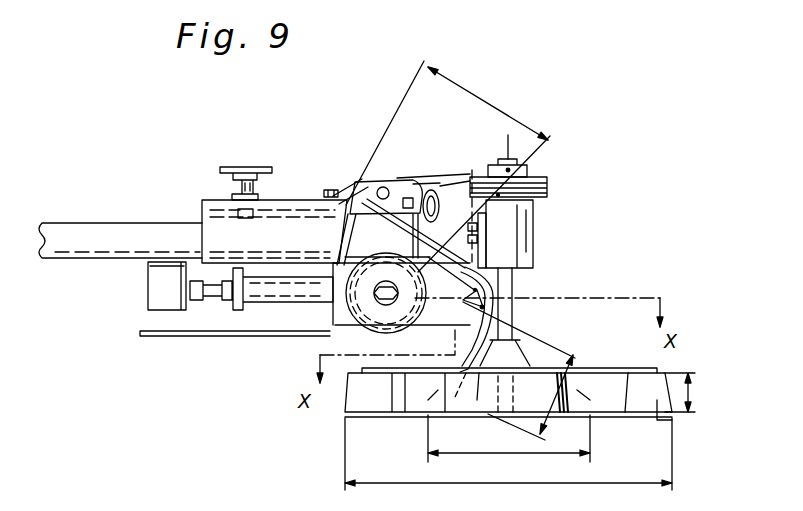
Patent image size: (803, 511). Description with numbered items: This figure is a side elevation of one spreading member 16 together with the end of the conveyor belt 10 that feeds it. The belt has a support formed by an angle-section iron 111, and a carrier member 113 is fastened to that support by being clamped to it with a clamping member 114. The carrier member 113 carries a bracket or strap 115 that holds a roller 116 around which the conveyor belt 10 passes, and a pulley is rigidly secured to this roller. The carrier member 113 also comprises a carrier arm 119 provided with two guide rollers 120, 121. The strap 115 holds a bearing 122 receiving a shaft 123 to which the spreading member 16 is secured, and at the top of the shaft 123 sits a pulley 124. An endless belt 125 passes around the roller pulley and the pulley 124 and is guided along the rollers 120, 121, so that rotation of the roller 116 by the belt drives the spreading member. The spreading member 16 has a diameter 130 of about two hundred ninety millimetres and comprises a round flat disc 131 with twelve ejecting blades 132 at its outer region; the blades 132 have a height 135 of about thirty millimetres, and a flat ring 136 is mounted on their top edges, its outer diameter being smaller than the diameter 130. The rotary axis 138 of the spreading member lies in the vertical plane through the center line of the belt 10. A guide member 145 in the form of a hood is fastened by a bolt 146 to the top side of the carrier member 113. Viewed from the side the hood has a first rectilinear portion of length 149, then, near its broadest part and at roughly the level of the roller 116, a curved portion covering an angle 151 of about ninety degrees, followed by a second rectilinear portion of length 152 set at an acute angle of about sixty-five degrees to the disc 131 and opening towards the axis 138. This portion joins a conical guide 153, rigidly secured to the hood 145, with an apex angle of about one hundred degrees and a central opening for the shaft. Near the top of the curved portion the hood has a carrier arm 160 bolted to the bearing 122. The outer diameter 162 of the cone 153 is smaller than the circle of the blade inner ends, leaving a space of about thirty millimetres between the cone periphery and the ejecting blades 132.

The conveyor belt 10 is at (142, 334).
The spreading member 16 is at (398, 418).
The angle-section iron 111 is at (72, 223).
The carrier member 113 is at (201, 206).
The clamping member 114 is at (276, 150).
The bracket or strap 115 is at (322, 304).
The roller 116 is at (337, 303).
The carrier arm 119 is at (351, 188).
The guide roller 120 is at (388, 176).
The guide roller 121 is at (398, 182).
The bearing 122 is at (523, 220).
The shaft 123 is at (513, 316).
The pulley 124 is at (533, 178).
The endless belt 125 is at (444, 172).
The diameter 130 is at (508, 455).
The round flat disc 131 is at (620, 415).
The ejecting blade 132 is at (668, 412).
The height 135 is at (692, 397).
The flat ring 136 is at (620, 354).
The rotary axis 138 is at (508, 137).
The guide member (hood) 145 is at (502, 283).
The bolt 146 is at (328, 189).
The length of first rectilinear portion 149 is at (517, 93).
The angle of curved portion 151 is at (463, 300).
The length of second rectilinear portion 152 is at (542, 392).
The conical guide 153 is at (525, 353).
The carrier arm 160 is at (466, 176).
The outer diameter of cone 162 is at (509, 438).